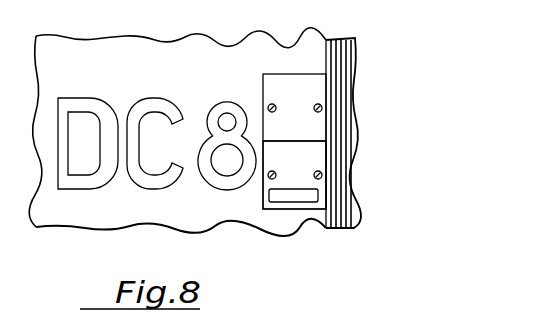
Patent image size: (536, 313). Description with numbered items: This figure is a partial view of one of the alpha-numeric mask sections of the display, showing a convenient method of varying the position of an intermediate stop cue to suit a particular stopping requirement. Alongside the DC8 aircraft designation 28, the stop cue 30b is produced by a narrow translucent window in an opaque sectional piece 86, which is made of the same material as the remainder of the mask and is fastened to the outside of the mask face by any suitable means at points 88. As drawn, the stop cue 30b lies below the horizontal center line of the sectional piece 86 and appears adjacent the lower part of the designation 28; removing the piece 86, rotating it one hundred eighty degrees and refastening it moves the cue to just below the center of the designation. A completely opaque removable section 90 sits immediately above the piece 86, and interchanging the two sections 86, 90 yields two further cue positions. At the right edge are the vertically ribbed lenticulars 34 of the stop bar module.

The indicia letters DC8 28 is at (97, 98).
The completely opaque removable section 90 is at (268, 86).
The fastening points 88 is at (316, 105).
The opaque sectional piece 86 is at (279, 204).
The stop cue 30b is at (308, 198).
The vertically ribbed lenticulars 34 is at (350, 207).